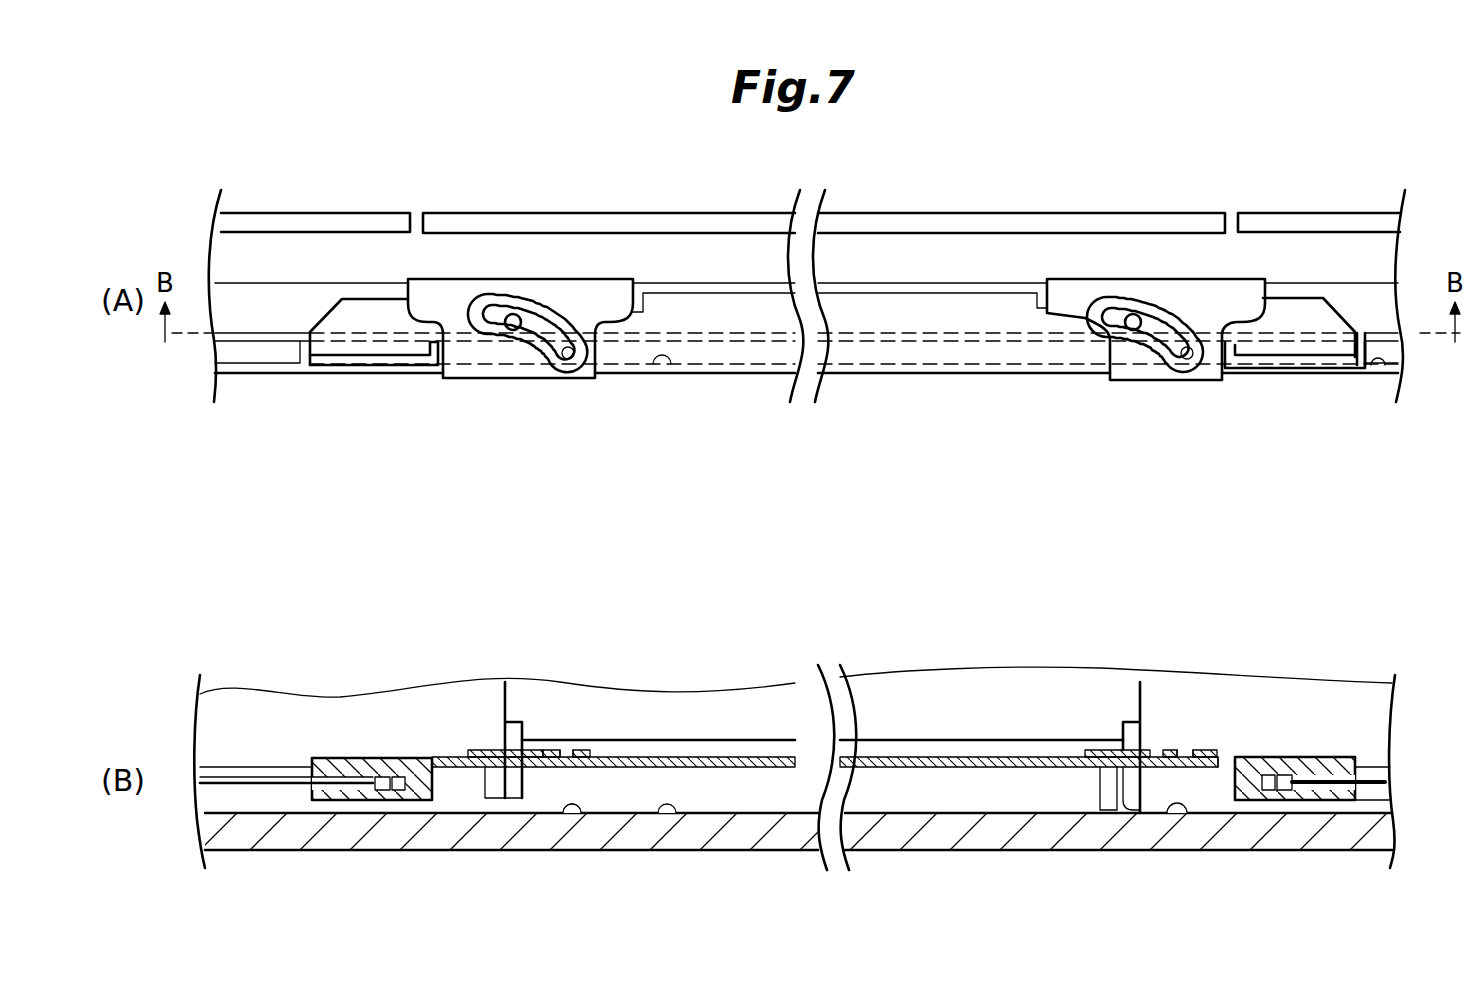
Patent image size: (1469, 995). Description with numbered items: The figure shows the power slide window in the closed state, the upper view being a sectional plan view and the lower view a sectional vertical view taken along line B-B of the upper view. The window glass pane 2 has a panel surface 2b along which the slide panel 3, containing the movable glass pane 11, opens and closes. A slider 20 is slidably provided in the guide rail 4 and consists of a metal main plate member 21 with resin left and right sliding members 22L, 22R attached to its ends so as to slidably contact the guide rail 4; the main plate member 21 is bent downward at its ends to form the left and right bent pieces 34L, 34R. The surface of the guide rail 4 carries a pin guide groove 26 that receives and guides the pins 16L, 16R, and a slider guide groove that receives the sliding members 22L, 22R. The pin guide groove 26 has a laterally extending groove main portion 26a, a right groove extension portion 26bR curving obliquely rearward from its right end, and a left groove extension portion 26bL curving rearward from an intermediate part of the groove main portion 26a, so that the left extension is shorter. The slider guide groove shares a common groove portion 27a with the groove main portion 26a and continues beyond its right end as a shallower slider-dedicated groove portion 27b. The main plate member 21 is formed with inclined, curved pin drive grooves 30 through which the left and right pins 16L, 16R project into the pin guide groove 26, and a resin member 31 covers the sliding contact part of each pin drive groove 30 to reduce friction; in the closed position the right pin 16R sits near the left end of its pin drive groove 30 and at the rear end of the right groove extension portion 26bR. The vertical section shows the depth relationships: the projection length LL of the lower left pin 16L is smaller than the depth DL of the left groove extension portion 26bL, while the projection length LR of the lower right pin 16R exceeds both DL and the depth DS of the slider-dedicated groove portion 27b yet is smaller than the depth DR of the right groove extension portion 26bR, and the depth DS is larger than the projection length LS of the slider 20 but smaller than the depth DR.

The window glass pane 2 is at (289, 213).
The panel surface 2b is at (337, 720).
The slide panel 3 is at (963, 207).
The guide rail 4 is at (1358, 296).
The movable glass pane 11 is at (698, 213).
The left pin 16L is at (512, 312).
The right pin 16R is at (1128, 312).
The slider 20 is at (905, 378).
The main plate member 21 is at (748, 358).
The left sliding member 22L is at (398, 362).
The right sliding member 22R is at (1317, 370).
The pin guide groove 26 is at (577, 815).
The groove main portion 26a is at (662, 370).
The common groove portion 27a is at (665, 815).
The left groove extension portion 26bL is at (525, 306).
The right groove extension portion 26bR is at (1146, 308).
The slider-dedicated groove portion 27b is at (1377, 372).
The pin drive groove 30 is at (565, 370).
The resin member 31 is at (493, 378).
The left bent piece 34L is at (343, 352).
The right bent piece 34R is at (1255, 352).
The projection length of lower left pin LL is at (548, 767).
The depth of left groove extension portion DL is at (623, 767).
The depth of right groove extension portion DR is at (1025, 767).
The projection length of lower right pin LR is at (1100, 810).
The projection length of slider LS is at (1220, 735).
The depth of slider-dedicated groove portion DS is at (1413, 730).